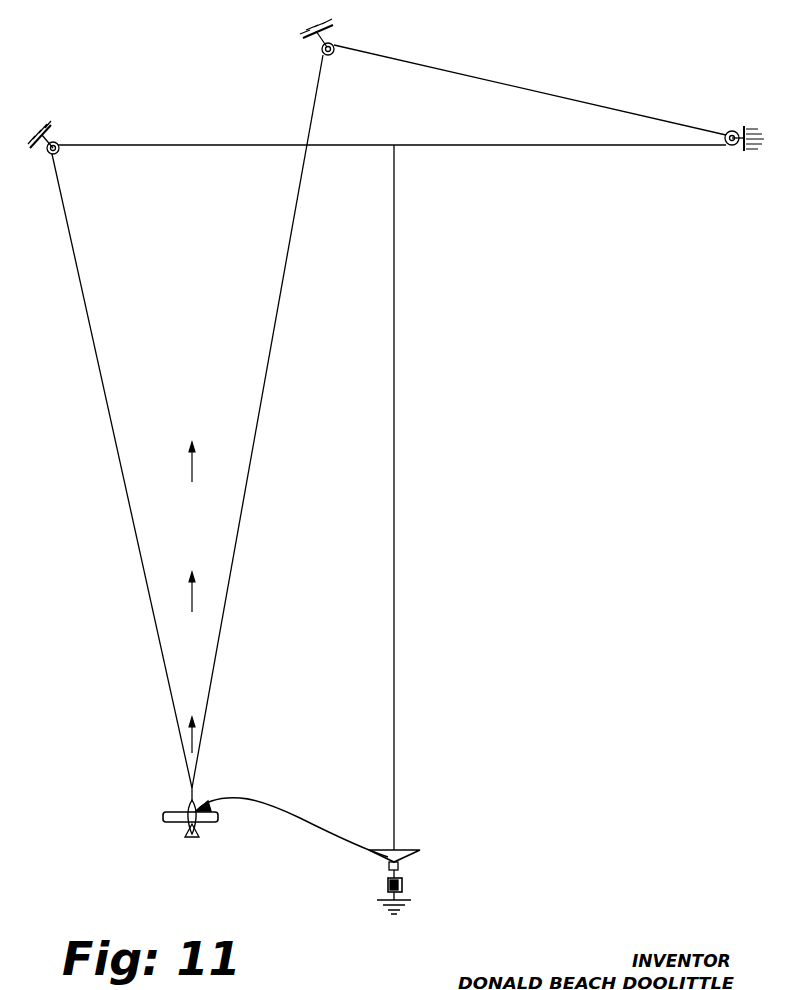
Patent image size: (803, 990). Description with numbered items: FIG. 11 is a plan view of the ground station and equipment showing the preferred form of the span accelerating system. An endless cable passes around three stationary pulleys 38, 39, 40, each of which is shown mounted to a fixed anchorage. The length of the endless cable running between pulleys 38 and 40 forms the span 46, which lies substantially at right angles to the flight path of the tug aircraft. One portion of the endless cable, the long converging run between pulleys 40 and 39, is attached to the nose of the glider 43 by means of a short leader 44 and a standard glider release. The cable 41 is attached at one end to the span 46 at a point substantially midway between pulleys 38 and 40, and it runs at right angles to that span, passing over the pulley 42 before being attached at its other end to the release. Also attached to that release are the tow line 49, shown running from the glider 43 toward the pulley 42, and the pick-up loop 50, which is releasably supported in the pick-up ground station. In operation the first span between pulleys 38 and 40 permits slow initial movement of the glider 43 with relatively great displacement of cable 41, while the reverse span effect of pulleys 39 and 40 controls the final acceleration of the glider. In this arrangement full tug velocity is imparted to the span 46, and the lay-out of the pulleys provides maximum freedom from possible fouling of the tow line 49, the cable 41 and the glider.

The stationary pulley 38 is at (731, 146).
The stationary pulley 39 is at (337, 44).
The stationary pulley 40 is at (60, 152).
The cable 41 is at (395, 313).
The pulley 42 is at (386, 882).
The glider 43 is at (164, 818).
The short leader 44 is at (196, 790).
The span of cable 46 is at (493, 146).
The tow line 49 is at (298, 808).
The pick-up loop 50 is at (406, 858).